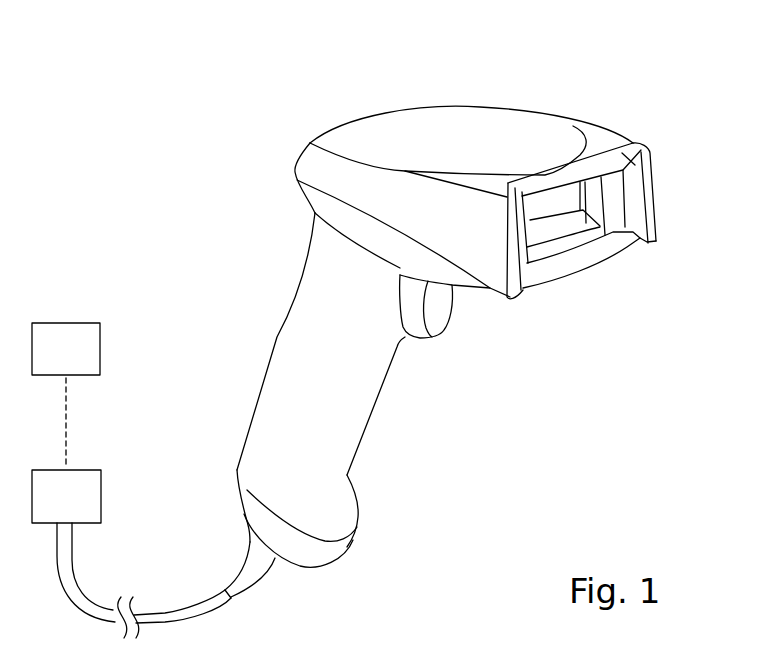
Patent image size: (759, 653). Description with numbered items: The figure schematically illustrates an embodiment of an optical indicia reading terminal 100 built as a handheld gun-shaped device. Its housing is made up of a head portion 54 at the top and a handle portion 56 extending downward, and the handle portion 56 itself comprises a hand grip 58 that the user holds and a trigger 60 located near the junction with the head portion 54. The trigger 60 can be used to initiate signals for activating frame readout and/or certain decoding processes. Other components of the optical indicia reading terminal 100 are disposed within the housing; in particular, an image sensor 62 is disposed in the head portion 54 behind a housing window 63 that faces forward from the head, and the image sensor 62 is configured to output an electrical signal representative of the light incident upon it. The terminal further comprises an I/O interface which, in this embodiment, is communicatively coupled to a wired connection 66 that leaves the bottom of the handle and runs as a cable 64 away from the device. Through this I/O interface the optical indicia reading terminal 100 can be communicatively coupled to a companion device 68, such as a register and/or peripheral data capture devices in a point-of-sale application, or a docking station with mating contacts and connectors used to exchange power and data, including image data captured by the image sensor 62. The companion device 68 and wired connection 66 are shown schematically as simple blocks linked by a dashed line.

The optical indicia reading terminal 100 is at (655, 50).
The head portion 54 is at (681, 133).
The handle portion 56 is at (389, 436).
The hand grip 58 is at (276, 352).
The trigger 60 is at (443, 315).
The image sensor 62 is at (581, 182).
The housing window 63 is at (556, 200).
The cable 64 is at (277, 592).
The wired connection 66 is at (66, 496).
The companion device 68 is at (66, 395).